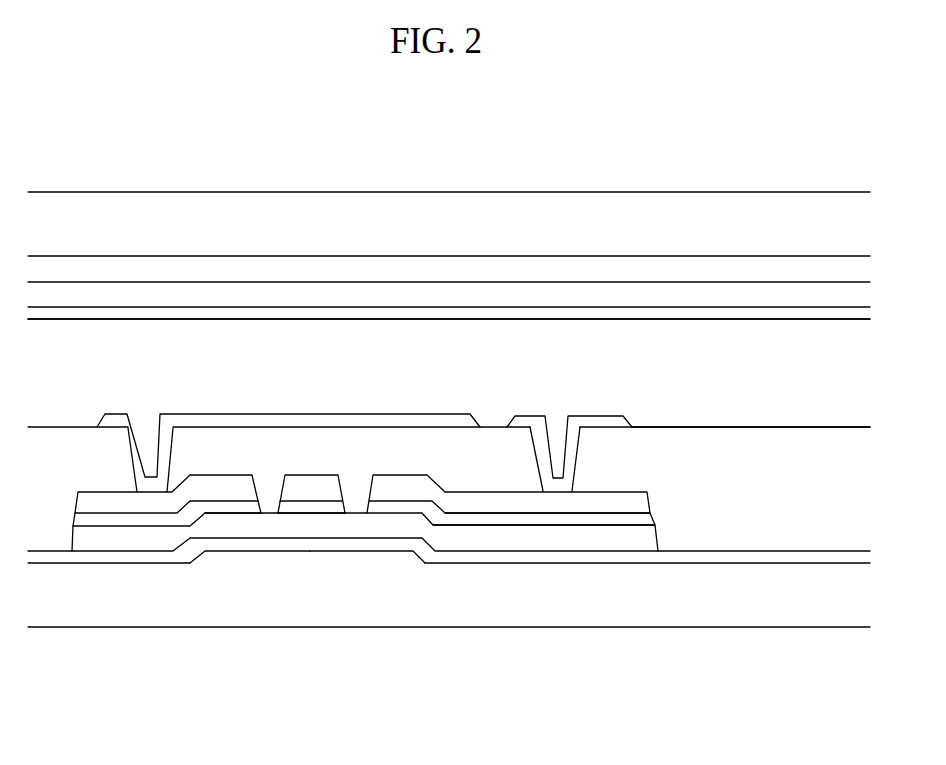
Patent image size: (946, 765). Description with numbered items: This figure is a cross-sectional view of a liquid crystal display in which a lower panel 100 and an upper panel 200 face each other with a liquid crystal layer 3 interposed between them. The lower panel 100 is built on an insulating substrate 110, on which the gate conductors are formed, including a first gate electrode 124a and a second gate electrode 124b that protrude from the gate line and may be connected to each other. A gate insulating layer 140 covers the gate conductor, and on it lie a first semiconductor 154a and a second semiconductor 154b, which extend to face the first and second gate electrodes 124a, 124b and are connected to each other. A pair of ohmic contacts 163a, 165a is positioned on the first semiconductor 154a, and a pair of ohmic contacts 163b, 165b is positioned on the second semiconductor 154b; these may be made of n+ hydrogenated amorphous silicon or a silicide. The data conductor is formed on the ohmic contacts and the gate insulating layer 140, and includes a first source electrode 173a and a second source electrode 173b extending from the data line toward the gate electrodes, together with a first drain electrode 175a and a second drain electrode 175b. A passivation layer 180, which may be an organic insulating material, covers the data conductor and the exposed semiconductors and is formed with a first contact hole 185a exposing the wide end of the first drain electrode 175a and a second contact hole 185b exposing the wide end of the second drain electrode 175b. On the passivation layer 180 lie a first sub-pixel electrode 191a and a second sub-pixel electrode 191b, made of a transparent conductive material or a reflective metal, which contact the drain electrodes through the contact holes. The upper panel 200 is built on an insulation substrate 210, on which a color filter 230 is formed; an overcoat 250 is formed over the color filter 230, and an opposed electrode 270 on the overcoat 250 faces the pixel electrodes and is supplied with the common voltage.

The liquid crystal layer 3 is at (877, 321).
The lower panel 100 is at (478, 443).
The insulating substrate 110 is at (665, 610).
The first gate electrode 124a is at (270, 557).
The second gate electrode 124b is at (400, 557).
The gate insulating layer 140 is at (733, 565).
The first semiconductor 154a is at (225, 527).
The second semiconductor 154b is at (407, 522).
The ohmic contact 163a is at (303, 624).
The ohmic contact 163b is at (308, 507).
The ohmic contact 165a is at (167, 522).
The ohmic contact 165b is at (583, 520).
The first source electrode 173a is at (339, 580).
The second source electrode 173b is at (330, 487).
The first drain electrode 175a is at (137, 502).
The second drain electrode 175b is at (523, 503).
The passivation layer 180 is at (800, 540).
The first contact hole 185a is at (140, 445).
The second contact hole 185b is at (568, 443).
The first sub-pixel electrode 191a is at (248, 422).
The second sub-pixel electrode 191b is at (612, 420).
The upper panel 200 is at (476, 228).
The insulation substrate 210 is at (730, 210).
The color filter 230 is at (368, 270).
The overcoat 250 is at (468, 298).
The opposed electrode 270 is at (810, 312).